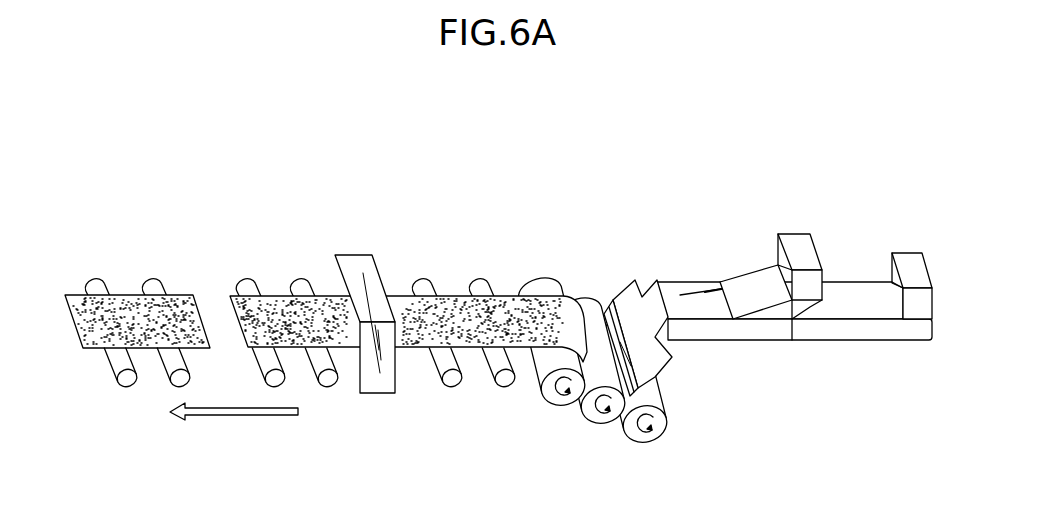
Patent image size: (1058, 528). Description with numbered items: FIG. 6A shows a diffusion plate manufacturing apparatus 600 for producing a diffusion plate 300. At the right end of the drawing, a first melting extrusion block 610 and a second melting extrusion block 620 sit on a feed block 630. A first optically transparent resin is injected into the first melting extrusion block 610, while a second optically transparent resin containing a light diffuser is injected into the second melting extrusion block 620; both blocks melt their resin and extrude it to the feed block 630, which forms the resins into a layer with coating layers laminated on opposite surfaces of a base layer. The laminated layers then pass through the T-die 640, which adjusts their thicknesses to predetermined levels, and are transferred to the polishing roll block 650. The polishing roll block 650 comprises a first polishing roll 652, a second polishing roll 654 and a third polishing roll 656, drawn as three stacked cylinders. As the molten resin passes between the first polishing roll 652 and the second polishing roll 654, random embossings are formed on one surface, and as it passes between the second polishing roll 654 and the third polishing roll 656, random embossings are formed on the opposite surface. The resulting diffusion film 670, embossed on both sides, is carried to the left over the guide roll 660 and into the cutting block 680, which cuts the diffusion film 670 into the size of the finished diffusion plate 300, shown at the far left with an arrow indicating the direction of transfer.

The diffusion plate 300 is at (124, 295).
The diffusion plate manufacturing apparatus 600 is at (725, 294).
The first melting extrusion block 610 is at (905, 253).
The second melting extrusion block 620 is at (792, 234).
The feed block 630 is at (763, 340).
The T-die 640 is at (618, 298).
The polishing roll block 650 is at (595, 394).
The first polishing roll 652 is at (639, 443).
The second polishing roll 654 is at (593, 422).
The third polishing roll 656 is at (554, 380).
The guide roll 660 is at (447, 387).
The diffusion film 670 is at (408, 337).
The cutting block 680 is at (349, 255).